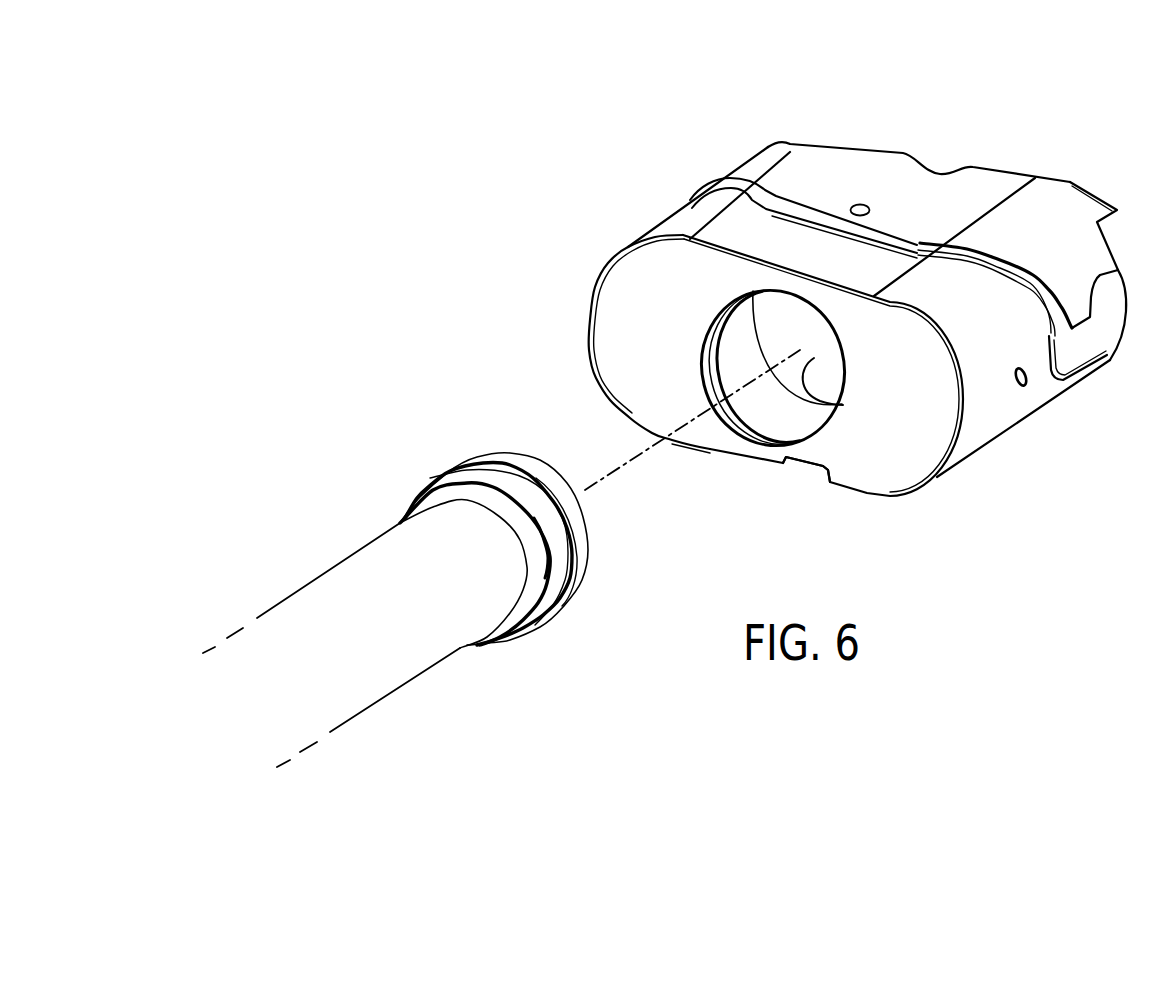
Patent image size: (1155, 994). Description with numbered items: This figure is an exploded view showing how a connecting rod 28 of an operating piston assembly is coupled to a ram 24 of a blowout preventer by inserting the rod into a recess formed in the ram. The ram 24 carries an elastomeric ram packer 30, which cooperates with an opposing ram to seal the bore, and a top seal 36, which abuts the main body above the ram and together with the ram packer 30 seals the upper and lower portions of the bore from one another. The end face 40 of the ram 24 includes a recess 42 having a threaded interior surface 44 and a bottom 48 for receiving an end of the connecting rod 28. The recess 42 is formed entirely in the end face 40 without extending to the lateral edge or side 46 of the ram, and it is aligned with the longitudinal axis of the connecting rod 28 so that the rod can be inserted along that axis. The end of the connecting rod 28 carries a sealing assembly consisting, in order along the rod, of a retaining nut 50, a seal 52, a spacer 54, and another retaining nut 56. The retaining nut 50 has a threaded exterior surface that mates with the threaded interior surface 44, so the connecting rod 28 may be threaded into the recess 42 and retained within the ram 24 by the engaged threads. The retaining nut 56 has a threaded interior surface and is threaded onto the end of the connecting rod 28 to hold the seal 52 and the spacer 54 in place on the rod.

The ram 24 is at (987, 180).
The connecting rod 28 is at (358, 578).
The ram packer 30 is at (1087, 337).
The top seal 36 is at (720, 186).
The end face 40 is at (607, 309).
The recess 42 is at (780, 397).
The threaded interior surface 44 is at (708, 348).
The lateral edge or side 46 is at (800, 464).
The bottom 48 is at (843, 405).
The retaining nut 50 is at (540, 620).
The seal 52 is at (533, 483).
The spacer 54 is at (570, 573).
The retaining nut 56 is at (580, 560).